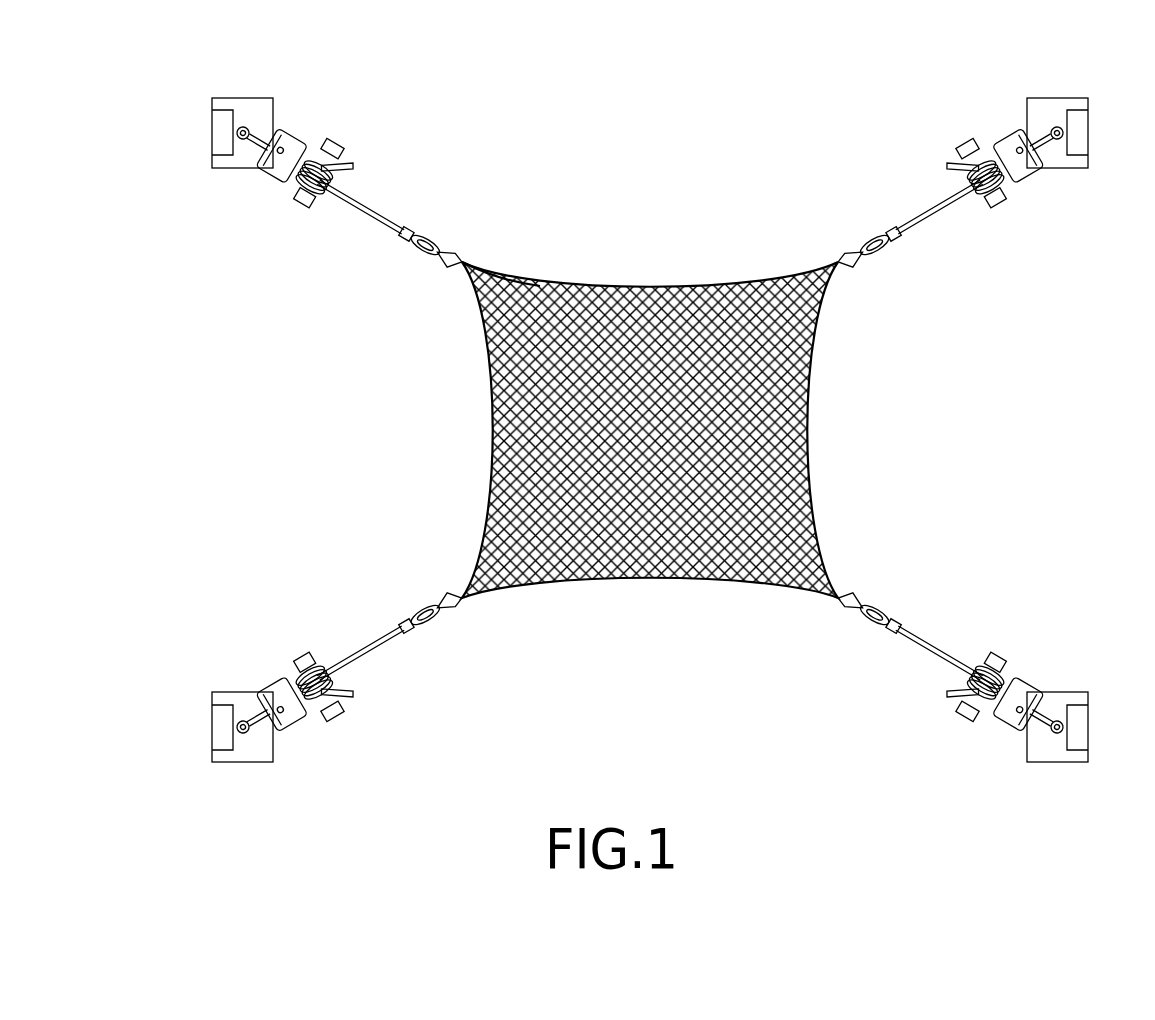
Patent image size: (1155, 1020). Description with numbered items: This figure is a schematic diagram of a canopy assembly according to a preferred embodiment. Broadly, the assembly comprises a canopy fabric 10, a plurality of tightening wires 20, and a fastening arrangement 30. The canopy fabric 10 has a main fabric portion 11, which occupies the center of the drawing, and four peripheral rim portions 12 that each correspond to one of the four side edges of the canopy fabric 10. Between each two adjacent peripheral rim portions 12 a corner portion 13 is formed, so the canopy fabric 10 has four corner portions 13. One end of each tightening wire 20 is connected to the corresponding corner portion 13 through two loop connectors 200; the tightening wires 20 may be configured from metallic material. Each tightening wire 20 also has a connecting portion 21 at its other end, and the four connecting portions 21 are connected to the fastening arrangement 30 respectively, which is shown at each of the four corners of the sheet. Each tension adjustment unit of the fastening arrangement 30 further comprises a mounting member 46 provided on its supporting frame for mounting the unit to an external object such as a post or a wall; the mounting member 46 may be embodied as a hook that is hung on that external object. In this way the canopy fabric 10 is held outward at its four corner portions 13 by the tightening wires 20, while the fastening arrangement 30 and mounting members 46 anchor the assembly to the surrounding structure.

The canopy fabric 10 is at (646, 386).
The main fabric portion 11 is at (793, 471).
The peripheral rim portion 12 is at (700, 273).
The corner portion 13 is at (517, 248).
The tightening wire 20 is at (373, 217).
The connecting portion 21 is at (336, 155).
The fastening arrangement 30 is at (677, 405).
The mounting member 46 is at (252, 127).
The loop connector 200 is at (448, 250).